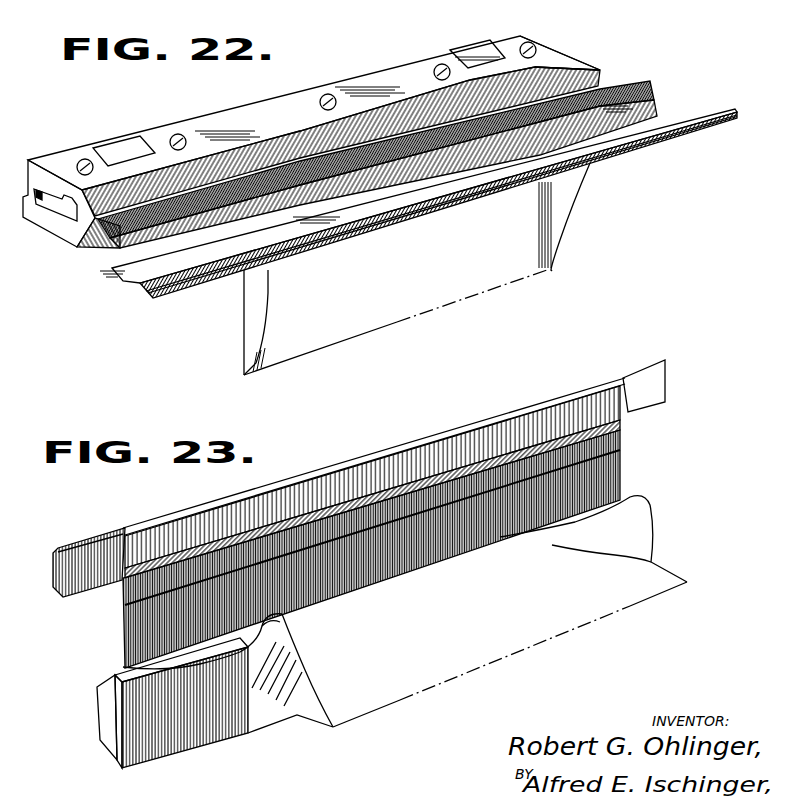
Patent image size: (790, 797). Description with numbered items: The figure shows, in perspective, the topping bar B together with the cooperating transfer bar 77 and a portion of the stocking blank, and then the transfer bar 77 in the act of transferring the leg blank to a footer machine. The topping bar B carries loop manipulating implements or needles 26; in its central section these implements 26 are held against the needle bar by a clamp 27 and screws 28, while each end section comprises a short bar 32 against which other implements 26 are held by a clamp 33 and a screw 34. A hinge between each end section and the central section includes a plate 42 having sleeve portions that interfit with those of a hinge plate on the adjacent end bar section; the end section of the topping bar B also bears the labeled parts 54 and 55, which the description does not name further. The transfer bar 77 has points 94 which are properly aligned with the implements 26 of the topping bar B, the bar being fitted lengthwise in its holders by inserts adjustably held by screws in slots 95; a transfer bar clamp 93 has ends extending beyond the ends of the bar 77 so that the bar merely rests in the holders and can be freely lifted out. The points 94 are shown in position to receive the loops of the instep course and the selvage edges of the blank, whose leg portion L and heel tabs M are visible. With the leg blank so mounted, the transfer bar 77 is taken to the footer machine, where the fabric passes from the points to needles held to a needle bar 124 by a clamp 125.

In FIG. 22, the loop manipulating implements 26 is at (103, 241).
In FIG. 22, the clamp 27 is at (193, 125).
In FIG. 22, the screws 28 is at (172, 136).
In FIG. 22, the short bar 32 is at (60, 230).
In FIG. 22, the clamp 33 is at (533, 42).
In FIG. 22, the screw 34 is at (537, 47).
In FIG. 22, the hinge plate 42 is at (112, 144).
In FIG. 22, the end screw 54 is at (84, 159).
In FIG. 22, the left end block 55 is at (44, 161).
In FIG. 22, the transfer bar 77 is at (657, 143).
In FIG. 23, the transfer bar 77 is at (200, 508).
In FIG. 23, the transfer bar clamp 93 is at (75, 541).
In FIG. 22, the points 94 is at (648, 102).
In FIG. 23, the points 94 is at (124, 597).
In FIG. 22, the slots 95 is at (712, 100).
In FIG. 23, the needle bar 124 is at (130, 735).
In FIG. 23, the clamp 125 is at (110, 700).
In FIG. 22, the topping bar B is at (455, 30).
In FIG. 22, the leg portion L is at (549, 268).
In FIG. 23, the leg portion L is at (630, 597).
In FIG. 23, the heel tabs M is at (213, 667).